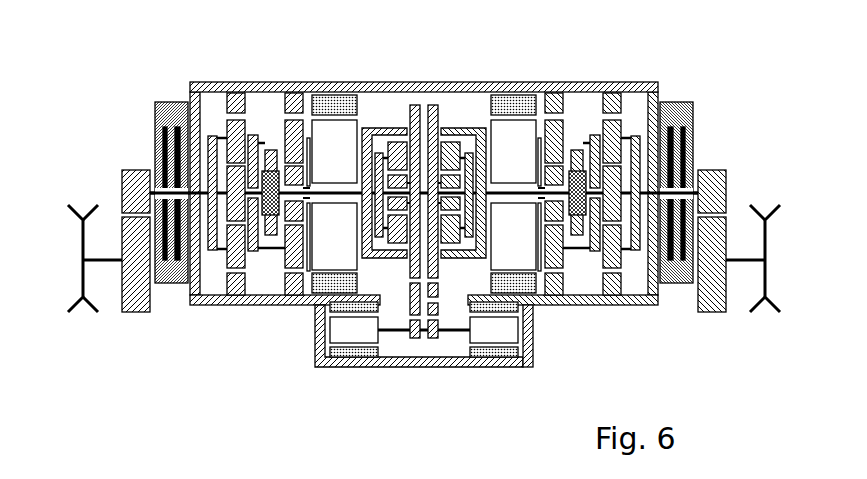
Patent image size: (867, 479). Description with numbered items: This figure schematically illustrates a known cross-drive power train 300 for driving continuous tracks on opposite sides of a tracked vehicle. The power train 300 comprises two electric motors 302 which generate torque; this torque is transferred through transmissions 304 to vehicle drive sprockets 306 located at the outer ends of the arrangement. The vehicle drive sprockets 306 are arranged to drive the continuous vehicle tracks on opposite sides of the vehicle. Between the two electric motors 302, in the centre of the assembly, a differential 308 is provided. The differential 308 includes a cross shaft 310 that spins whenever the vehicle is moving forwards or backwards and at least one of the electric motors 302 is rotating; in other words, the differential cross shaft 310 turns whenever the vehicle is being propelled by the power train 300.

The cross-drive power train 300 is at (680, 82).
The electric motor 302 is at (358, 72).
The transmission 304 is at (190, 72).
The vehicle drive sprocket 306 is at (82, 238).
The differential 308 is at (487, 72).
The cross shaft 310 is at (429, 195).